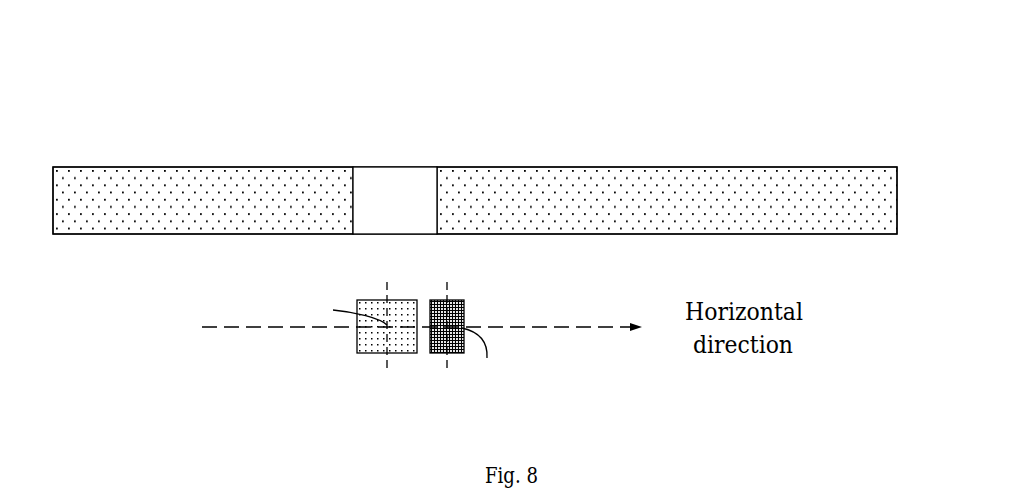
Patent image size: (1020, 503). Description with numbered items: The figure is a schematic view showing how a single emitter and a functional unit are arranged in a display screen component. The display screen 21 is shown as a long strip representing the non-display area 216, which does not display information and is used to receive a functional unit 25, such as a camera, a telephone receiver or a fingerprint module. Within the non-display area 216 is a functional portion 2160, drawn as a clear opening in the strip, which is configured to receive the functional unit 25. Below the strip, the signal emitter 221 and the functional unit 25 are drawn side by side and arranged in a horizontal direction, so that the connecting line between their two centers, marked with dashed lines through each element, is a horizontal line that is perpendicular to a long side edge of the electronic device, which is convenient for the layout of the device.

The display screen 21 is at (499, 121).
The non-display area 216 is at (797, 167).
The functional portion 2160 is at (387, 176).
The signal emitter 221 is at (370, 355).
The functional unit 25 is at (464, 322).